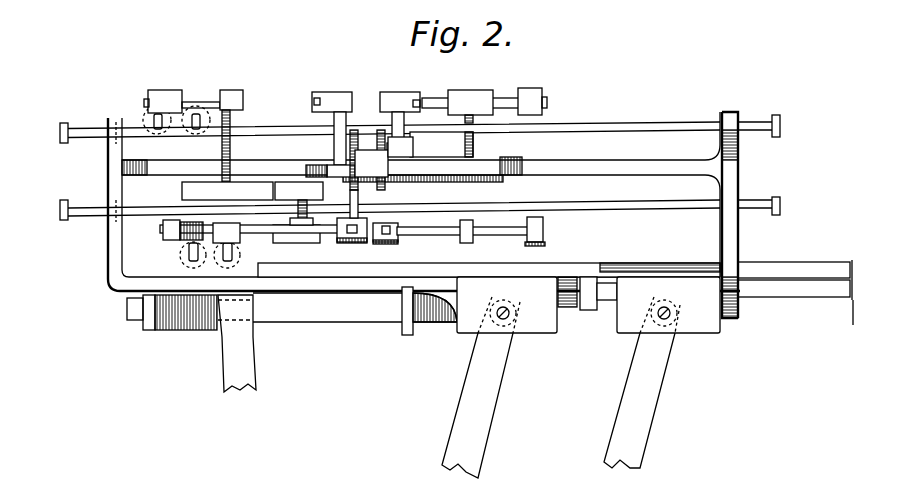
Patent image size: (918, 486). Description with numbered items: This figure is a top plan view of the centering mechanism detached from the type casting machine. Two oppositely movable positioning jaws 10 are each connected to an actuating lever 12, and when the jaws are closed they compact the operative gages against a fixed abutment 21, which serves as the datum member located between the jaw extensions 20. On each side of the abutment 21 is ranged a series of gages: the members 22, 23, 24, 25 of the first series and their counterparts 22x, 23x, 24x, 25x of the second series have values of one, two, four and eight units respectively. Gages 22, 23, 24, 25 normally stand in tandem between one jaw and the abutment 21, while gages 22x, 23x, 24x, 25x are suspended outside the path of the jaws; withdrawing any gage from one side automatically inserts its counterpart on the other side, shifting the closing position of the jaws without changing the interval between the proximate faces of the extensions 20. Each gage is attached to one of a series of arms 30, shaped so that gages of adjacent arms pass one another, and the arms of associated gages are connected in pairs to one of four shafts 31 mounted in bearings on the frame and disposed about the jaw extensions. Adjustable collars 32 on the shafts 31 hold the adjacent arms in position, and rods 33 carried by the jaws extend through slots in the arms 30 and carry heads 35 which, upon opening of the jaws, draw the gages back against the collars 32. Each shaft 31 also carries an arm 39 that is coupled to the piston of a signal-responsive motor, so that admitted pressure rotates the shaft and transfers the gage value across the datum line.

The positioning jaw 10 is at (478, 330).
The actuating lever 12 is at (483, 427).
The jaw extension 20 is at (276, 162).
The fixed abutment 21 is at (368, 164).
The gage 22 is at (340, 167).
The gage 22x is at (394, 140).
The gage 23 is at (306, 170).
The gage 23x is at (413, 144).
The gage 24 is at (299, 203).
The gage 24x is at (464, 189).
The gage 25 is at (227, 191).
The gage 25x is at (506, 193).
The arm 30 is at (487, 143).
The shaft 31 is at (495, 106).
The adjustable collar 32 is at (530, 98).
The rod 33 is at (620, 120).
The head 35 is at (78, 120).
The arm 39 is at (198, 106).